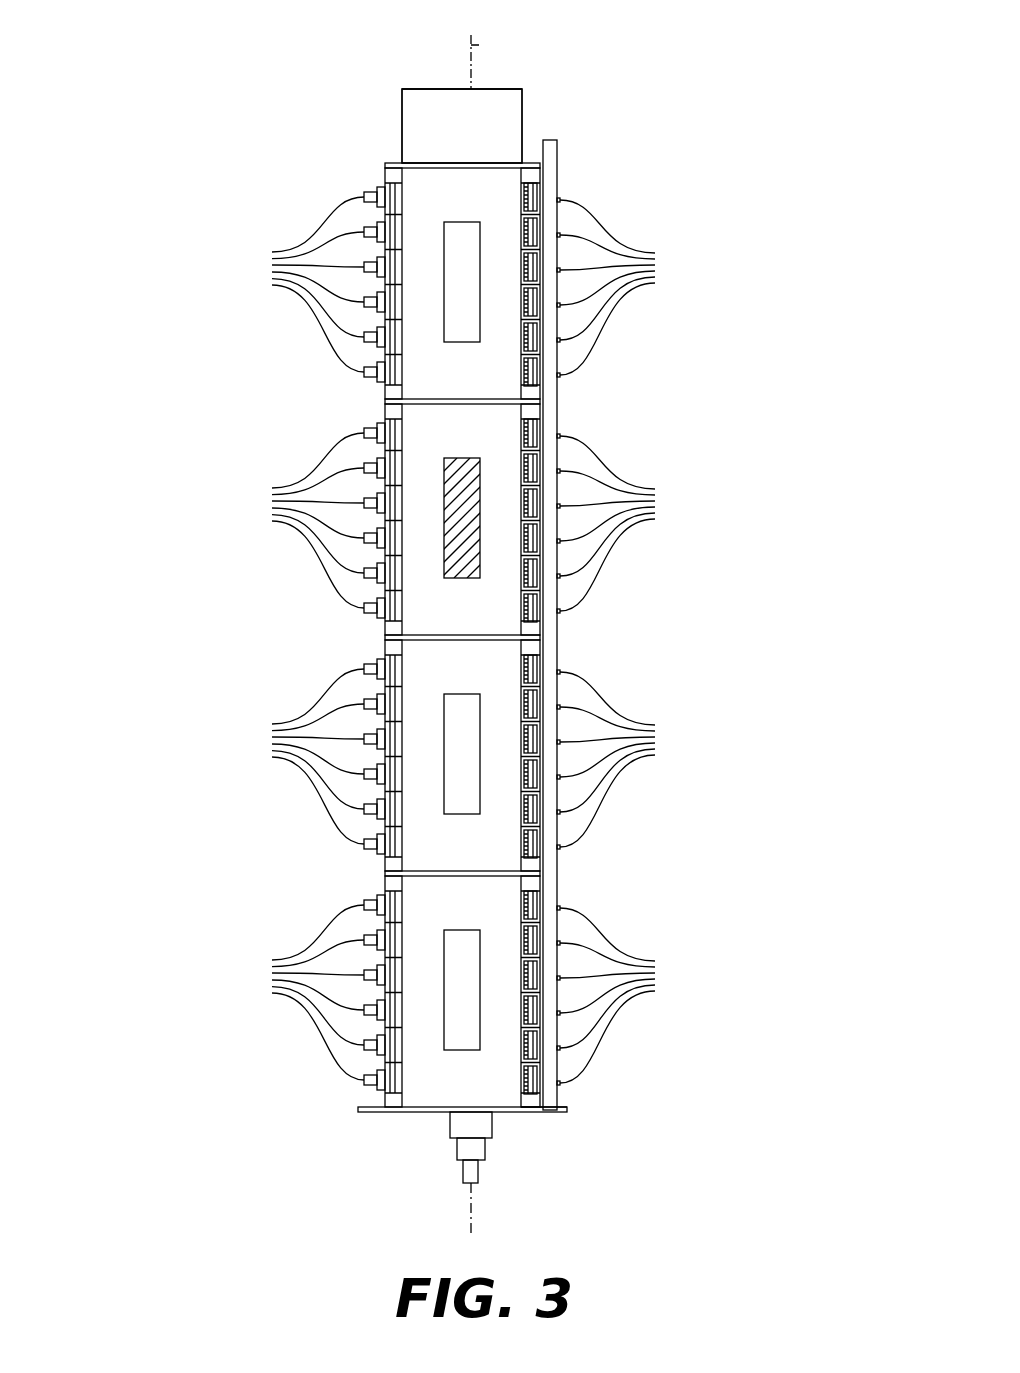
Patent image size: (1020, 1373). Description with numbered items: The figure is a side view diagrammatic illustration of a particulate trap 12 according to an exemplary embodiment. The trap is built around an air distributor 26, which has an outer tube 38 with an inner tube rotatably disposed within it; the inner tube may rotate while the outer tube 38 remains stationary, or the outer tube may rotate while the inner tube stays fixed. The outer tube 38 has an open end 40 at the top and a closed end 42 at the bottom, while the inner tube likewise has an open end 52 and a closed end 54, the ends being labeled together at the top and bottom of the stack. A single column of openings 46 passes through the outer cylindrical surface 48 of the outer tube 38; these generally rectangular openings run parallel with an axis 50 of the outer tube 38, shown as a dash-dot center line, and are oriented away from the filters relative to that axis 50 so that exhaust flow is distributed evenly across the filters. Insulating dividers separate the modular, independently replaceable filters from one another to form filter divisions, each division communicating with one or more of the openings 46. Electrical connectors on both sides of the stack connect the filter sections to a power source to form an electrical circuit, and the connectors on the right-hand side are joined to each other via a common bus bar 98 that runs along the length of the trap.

The particulate trap 12 is at (412, 618).
The air distributor 26 is at (408, 1138).
The outer tube 38 is at (512, 122).
The open end 40 is at (521, 79).
The open end 52 is at (508, 87).
The closed end 42 is at (612, 1121).
The closed end 54 is at (540, 1100).
The openings 46 is at (461, 192).
The outer cylindrical surface 48 is at (427, 118).
The axis 50 is at (479, 45).
The common bus bar 98 is at (558, 877).